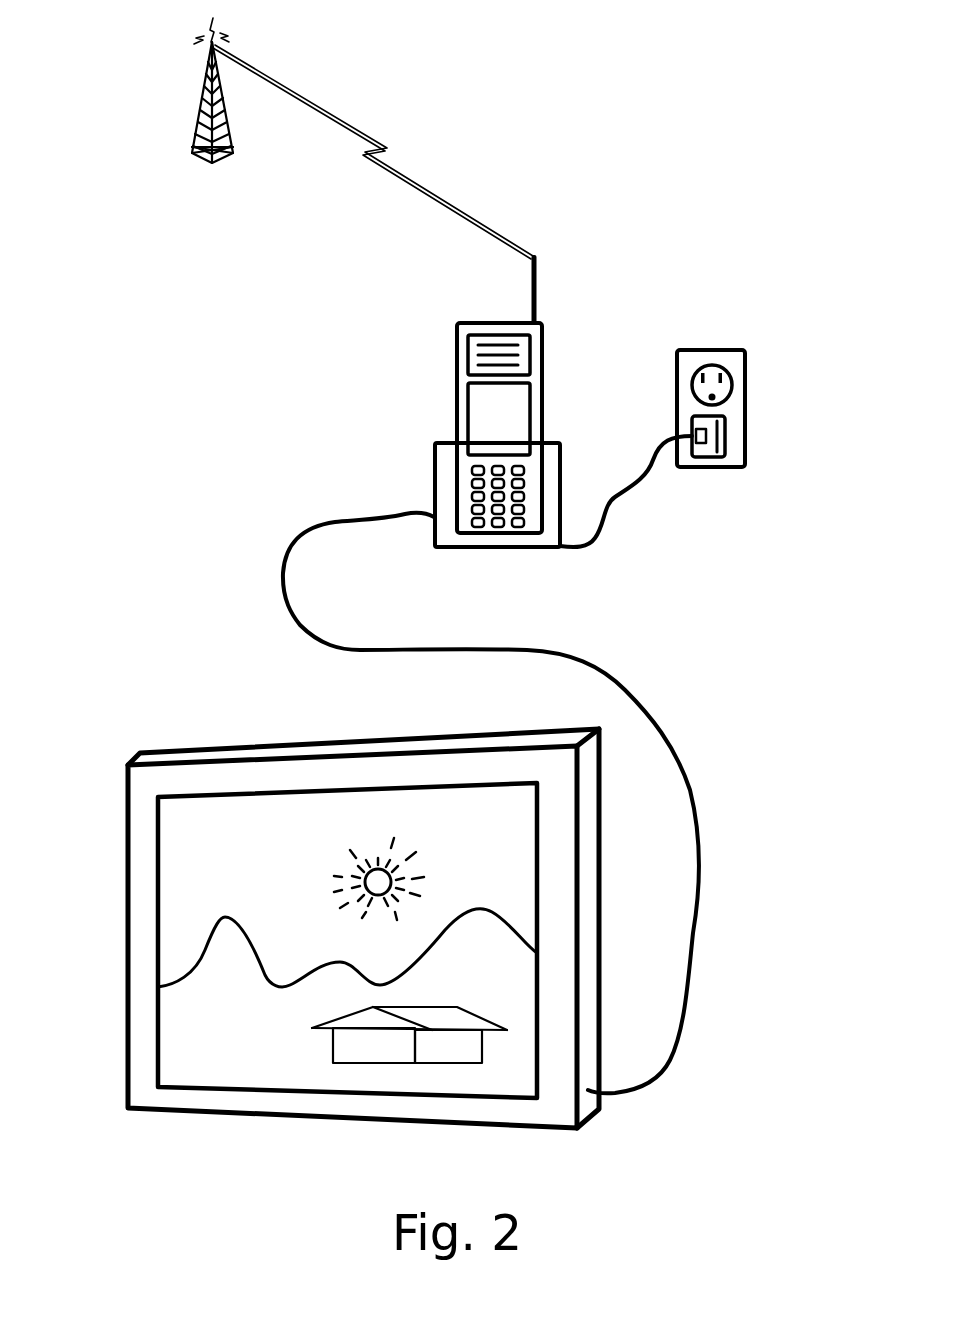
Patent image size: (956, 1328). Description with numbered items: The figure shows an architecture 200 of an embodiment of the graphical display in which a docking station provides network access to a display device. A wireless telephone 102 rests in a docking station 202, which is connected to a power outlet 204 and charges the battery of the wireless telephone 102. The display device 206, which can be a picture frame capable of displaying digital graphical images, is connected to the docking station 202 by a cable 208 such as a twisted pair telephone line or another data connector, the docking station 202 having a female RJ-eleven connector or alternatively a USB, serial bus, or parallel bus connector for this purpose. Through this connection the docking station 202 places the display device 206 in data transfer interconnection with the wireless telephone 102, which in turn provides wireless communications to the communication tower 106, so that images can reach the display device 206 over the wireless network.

The architecture 200 is at (500, 120).
The communication tower 106 is at (200, 103).
The wireless telephone 102 is at (455, 388).
The docking station 202 is at (434, 475).
The power outlet 204 is at (745, 395).
The cable 208 is at (282, 593).
The display device 206 is at (303, 747).